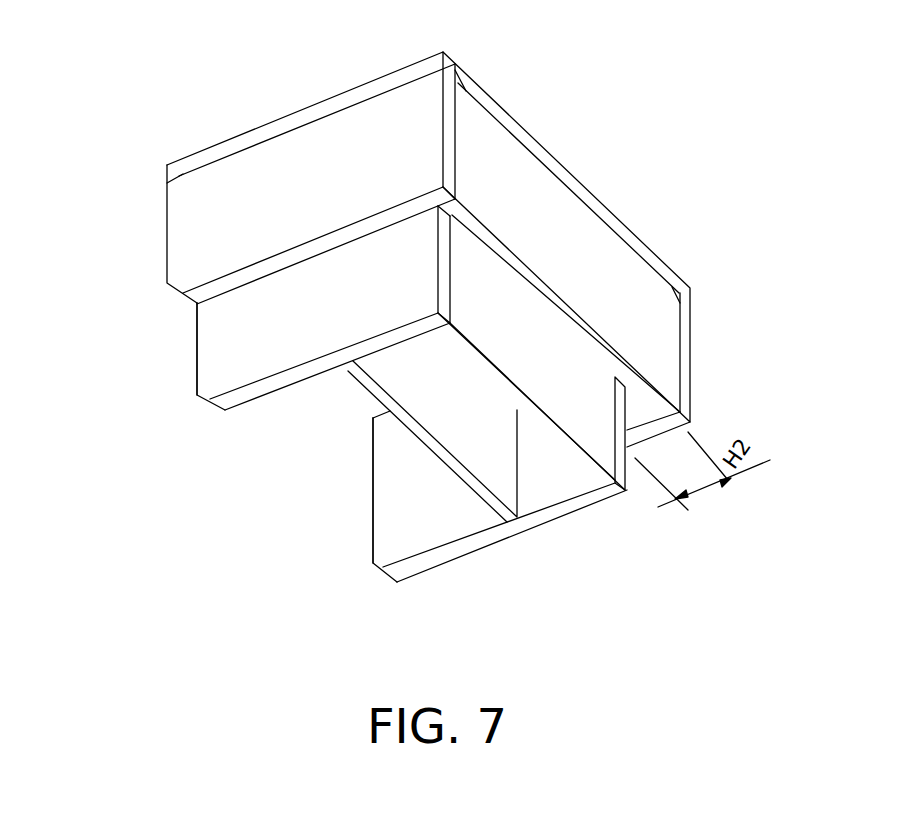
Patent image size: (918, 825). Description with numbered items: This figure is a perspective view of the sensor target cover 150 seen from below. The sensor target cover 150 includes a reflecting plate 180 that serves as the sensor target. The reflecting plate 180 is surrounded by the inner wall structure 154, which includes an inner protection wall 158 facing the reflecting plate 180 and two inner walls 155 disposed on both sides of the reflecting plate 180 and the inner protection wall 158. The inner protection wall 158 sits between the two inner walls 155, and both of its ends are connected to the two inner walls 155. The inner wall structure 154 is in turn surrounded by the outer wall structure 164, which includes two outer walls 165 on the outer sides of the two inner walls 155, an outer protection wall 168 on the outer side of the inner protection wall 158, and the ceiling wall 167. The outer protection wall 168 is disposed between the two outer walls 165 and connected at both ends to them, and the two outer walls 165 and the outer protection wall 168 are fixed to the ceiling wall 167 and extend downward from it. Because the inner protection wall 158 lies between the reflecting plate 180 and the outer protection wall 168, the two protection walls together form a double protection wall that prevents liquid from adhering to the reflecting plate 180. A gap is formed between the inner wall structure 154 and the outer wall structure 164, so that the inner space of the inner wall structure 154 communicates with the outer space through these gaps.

The sensor target cover 150 is at (588, 114).
The inner wall structure 154 is at (462, 576).
The inner walls 155 is at (197, 351).
The inner protection wall 158 is at (575, 405).
The outer wall structure 164 is at (226, 137).
The outer walls 165 is at (167, 237).
The ceiling wall 167 is at (336, 92).
The outer protection wall 168 is at (588, 262).
The reflecting plate 180 is at (356, 398).